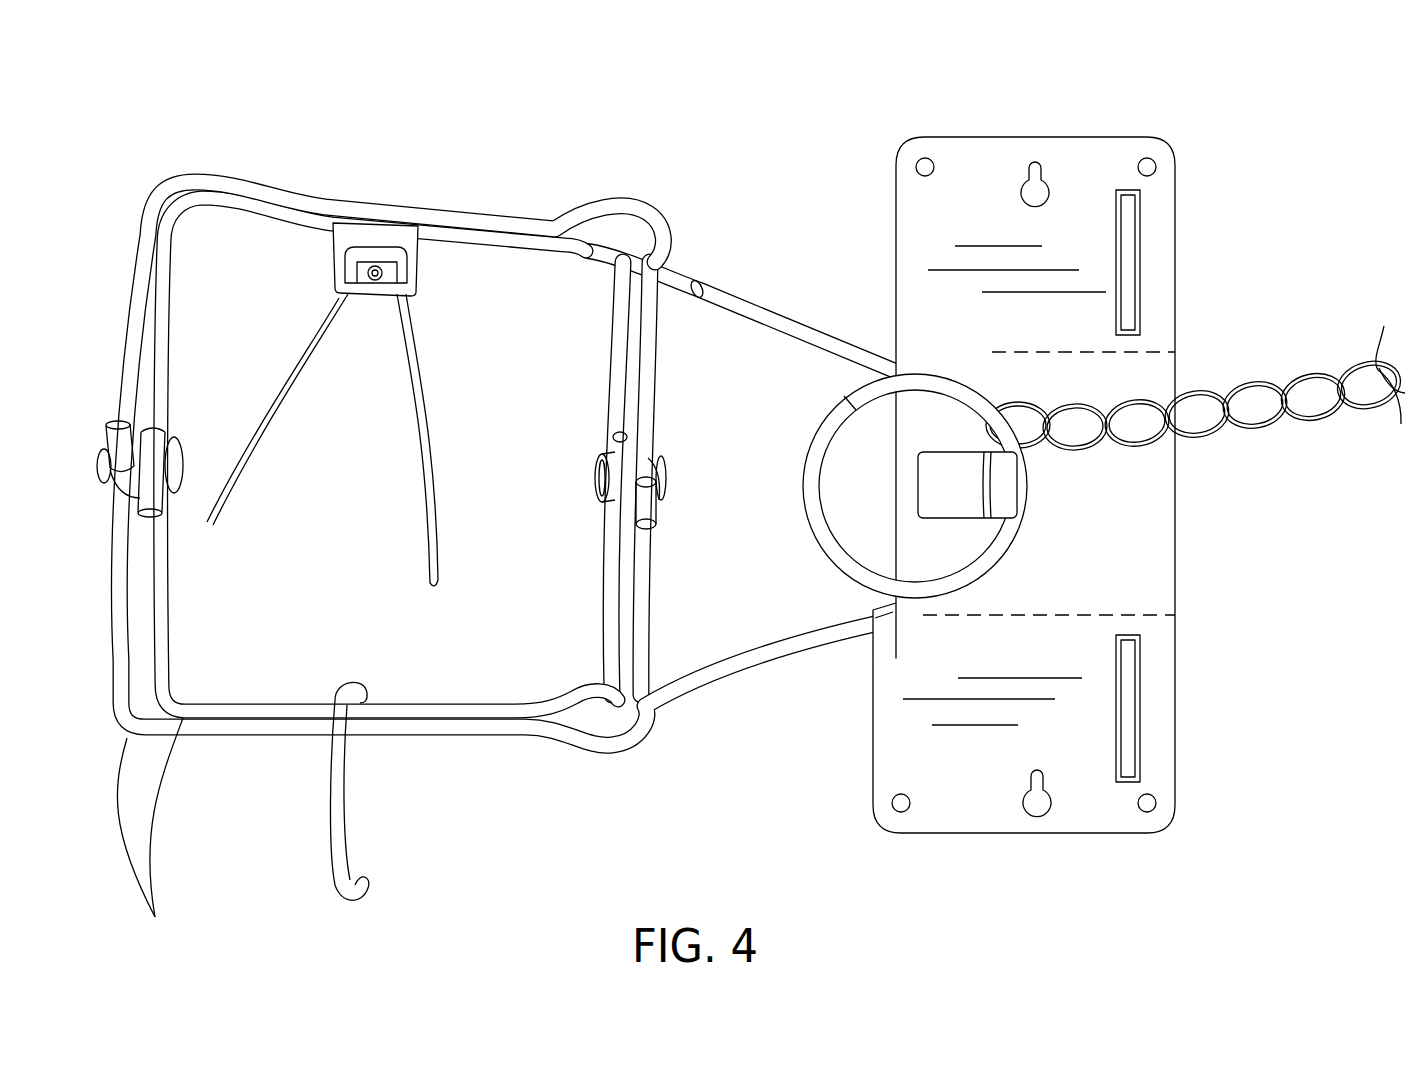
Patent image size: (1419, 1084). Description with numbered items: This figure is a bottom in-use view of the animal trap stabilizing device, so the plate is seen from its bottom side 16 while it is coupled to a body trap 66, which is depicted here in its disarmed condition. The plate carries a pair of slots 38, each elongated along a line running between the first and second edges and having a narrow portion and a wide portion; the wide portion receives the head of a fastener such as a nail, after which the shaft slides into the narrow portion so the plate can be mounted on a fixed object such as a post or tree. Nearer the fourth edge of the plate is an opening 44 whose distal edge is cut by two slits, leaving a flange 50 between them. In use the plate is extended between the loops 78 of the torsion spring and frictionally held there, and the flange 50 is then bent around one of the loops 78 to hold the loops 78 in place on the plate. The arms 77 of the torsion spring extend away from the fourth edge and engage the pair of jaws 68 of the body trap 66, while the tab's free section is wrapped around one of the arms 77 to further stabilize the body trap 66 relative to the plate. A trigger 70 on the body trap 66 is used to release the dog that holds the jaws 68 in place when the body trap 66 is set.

The bottom side 16 is at (1062, 178).
The slots 38 is at (1034, 158).
The opening 44 is at (935, 484).
The flange 50 is at (997, 490).
The body trap 66 is at (232, 108).
The jaws 68 is at (155, 917).
The trigger 70 is at (413, 386).
The arms 77 is at (737, 300).
The loops 78 is at (850, 402).